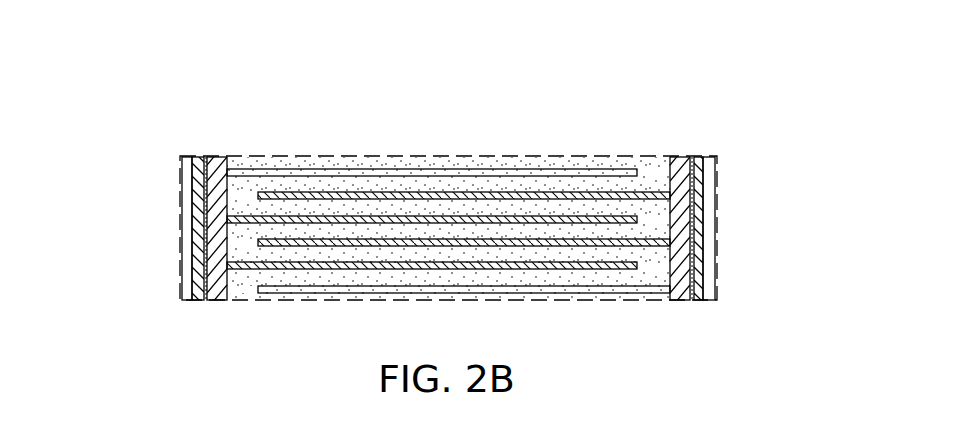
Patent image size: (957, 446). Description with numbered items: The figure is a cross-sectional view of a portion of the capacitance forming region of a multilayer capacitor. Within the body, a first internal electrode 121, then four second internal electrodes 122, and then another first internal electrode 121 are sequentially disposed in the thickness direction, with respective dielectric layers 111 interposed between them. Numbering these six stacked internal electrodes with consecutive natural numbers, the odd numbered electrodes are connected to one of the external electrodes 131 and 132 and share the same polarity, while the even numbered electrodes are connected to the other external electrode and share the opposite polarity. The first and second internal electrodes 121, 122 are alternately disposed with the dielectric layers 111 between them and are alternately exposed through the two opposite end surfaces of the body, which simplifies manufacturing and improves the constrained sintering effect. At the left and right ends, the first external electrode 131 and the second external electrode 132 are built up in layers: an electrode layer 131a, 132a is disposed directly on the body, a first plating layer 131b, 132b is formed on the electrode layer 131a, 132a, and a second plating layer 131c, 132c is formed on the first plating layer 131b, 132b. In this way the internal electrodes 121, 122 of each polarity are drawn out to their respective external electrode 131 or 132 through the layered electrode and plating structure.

The dielectric layer 111 is at (448, 189).
The first internal electrode 121 is at (283, 288).
The second internal electrode 122 is at (493, 263).
The first external electrode 131 is at (147, 233).
The electrode layer 131a is at (209, 203).
The first plating layer 131b is at (200, 242).
The second plating layer 131c is at (120, 192).
The second external electrode 132 is at (753, 233).
The electrode layer 132a is at (688, 188).
The first plating layer 132b is at (697, 222).
The second plating layer 132c is at (708, 260).